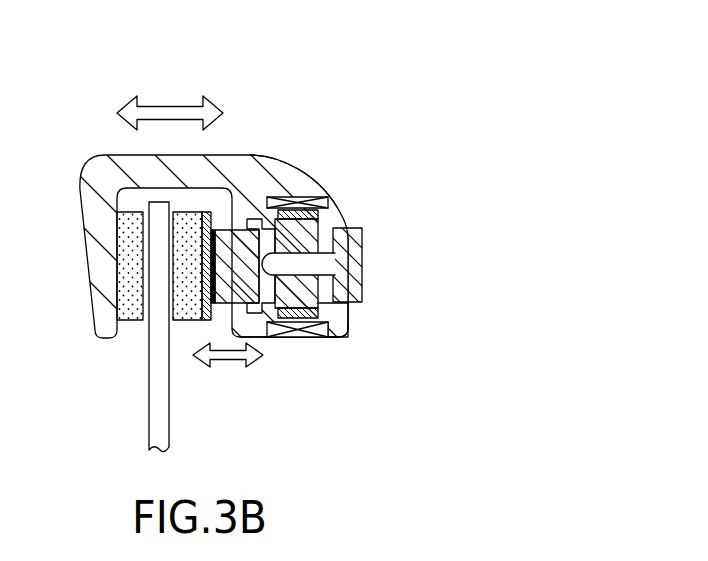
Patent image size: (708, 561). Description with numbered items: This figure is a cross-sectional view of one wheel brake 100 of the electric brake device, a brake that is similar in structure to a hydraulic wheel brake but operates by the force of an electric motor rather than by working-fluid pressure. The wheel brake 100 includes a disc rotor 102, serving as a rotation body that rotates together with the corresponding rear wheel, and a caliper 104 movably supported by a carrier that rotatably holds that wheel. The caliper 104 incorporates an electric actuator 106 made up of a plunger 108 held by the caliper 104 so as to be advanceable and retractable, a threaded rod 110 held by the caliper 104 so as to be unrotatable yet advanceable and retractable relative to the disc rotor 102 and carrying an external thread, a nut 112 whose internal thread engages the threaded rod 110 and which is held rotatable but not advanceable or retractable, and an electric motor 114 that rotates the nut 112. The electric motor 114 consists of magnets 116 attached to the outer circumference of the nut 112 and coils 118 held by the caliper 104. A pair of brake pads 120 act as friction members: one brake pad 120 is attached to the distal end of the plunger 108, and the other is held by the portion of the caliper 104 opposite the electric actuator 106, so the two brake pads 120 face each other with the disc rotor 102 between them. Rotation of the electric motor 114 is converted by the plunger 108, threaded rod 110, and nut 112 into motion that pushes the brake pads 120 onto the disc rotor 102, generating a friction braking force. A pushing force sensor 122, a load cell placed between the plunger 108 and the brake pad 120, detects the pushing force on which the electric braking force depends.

The wheel brake 100 is at (229, 232).
The disc rotor 102 is at (162, 427).
The caliper 104 is at (100, 170).
The electric actuator 106 is at (302, 167).
The plunger 108 is at (240, 287).
The threaded rod 110 is at (312, 262).
The nut 112 is at (318, 287).
The electric motor 114 is at (340, 323).
The magnets 116 is at (318, 314).
The coils 118 is at (320, 328).
The brake pads 120 is at (130, 322).
The pushing force sensor 122 is at (250, 205).